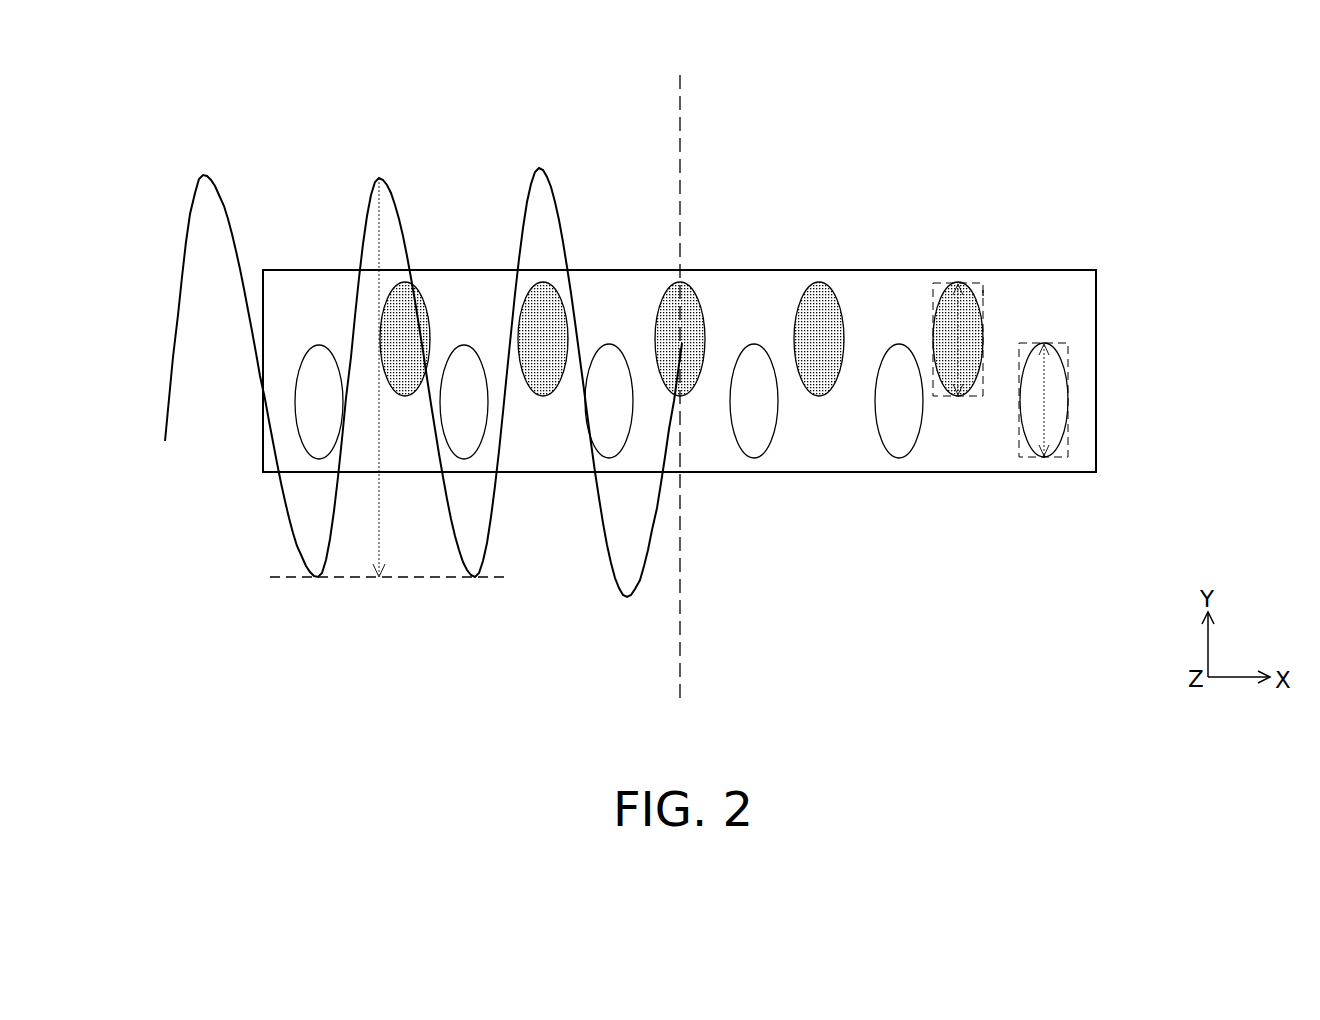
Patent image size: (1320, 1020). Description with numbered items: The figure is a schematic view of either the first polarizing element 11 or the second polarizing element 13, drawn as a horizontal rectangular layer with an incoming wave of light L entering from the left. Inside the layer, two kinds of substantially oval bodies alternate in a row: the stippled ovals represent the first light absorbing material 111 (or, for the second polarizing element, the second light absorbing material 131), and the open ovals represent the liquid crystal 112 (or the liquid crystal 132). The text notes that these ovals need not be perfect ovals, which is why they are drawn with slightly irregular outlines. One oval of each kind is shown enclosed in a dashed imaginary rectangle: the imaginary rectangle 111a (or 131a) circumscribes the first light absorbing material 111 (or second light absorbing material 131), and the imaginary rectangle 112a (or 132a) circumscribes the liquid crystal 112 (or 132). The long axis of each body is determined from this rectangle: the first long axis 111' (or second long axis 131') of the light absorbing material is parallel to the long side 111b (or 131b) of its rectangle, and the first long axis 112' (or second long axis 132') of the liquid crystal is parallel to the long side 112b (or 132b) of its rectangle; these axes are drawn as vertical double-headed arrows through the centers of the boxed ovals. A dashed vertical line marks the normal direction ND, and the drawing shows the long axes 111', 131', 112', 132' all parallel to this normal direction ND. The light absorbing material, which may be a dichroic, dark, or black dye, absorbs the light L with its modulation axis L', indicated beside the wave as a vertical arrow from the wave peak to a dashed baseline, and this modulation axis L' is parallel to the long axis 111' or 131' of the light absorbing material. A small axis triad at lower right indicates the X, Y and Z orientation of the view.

The first polarizing element 11 is at (654, 283).
The second polarizing element 13 is at (328, 287).
The first light absorbing material 111 is at (681, 276).
The second light absorbing material 131 is at (681, 276).
The first long axis 111' is at (907, 307).
The second long axis 131' is at (907, 307).
The imaginary rectangle 111a is at (975, 260).
The imaginary rectangle 131a is at (978, 292).
The long side 111b is at (1076, 246).
The long side 131b is at (985, 293).
The liquid crystal 112 is at (772, 401).
The liquid crystal 132 is at (772, 401).
The first long axis 112' is at (1150, 400).
The second long axis 132' is at (1150, 400).
The imaginary rectangle 112a is at (1062, 514).
The imaginary rectangle 132a is at (1058, 458).
The long side 112b is at (948, 444).
The long side 132b is at (1018, 440).
The light L is at (395, 382).
The modulation axis L' is at (387, 420).
The normal direction ND is at (675, 376).